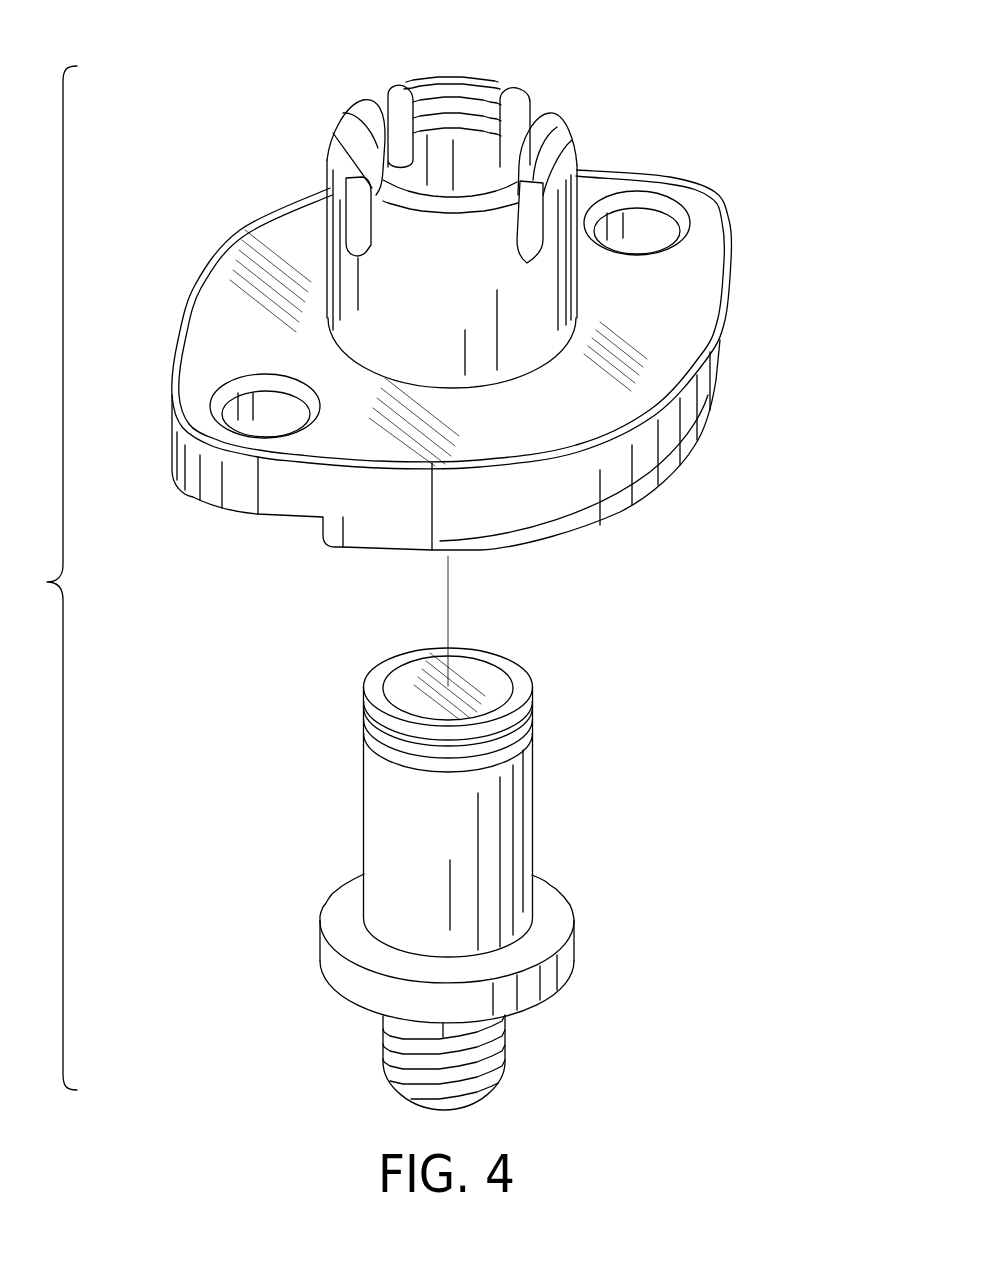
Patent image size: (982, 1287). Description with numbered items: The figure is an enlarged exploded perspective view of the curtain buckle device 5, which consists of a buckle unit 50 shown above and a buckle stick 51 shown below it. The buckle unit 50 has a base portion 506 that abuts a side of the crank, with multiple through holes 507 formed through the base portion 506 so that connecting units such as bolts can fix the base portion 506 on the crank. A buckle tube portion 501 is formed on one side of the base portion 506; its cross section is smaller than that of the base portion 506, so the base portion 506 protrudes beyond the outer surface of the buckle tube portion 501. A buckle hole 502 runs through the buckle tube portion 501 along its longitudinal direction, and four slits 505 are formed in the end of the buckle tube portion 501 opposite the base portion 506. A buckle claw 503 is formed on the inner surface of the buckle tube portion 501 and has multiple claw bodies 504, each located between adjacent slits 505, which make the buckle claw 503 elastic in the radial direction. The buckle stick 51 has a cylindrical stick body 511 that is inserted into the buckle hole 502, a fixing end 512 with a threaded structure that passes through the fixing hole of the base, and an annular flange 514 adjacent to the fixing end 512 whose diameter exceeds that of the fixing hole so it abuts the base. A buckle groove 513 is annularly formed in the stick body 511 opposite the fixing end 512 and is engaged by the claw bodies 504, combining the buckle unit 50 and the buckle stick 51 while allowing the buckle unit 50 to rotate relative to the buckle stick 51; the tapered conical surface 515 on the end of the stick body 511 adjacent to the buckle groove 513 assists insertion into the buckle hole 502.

The curtain buckle device 5 is at (722, 93).
The buckle unit 50 is at (580, 110).
The buckle tube portion 501 is at (350, 268).
The buckle hole 502 is at (438, 157).
The buckle claw 503 is at (470, 72).
The claw body 504 is at (475, 117).
The slit 505 is at (532, 243).
The base portion 506 is at (603, 410).
The through hole 507 is at (645, 222).
The buckle stick 51 is at (552, 825).
The stick body 511 is at (382, 827).
The fixing end 512 is at (477, 1067).
The buckle groove 513 is at (486, 752).
The annular flange 514 is at (547, 983).
The conical surface 515 is at (517, 702).